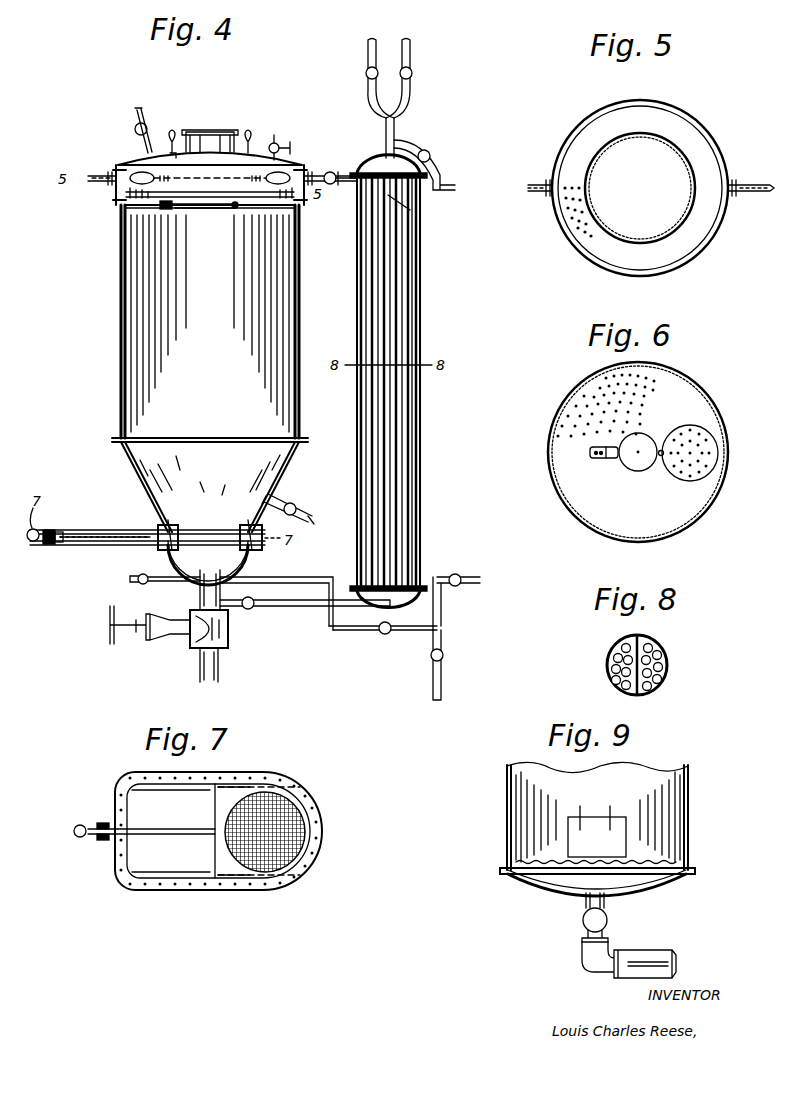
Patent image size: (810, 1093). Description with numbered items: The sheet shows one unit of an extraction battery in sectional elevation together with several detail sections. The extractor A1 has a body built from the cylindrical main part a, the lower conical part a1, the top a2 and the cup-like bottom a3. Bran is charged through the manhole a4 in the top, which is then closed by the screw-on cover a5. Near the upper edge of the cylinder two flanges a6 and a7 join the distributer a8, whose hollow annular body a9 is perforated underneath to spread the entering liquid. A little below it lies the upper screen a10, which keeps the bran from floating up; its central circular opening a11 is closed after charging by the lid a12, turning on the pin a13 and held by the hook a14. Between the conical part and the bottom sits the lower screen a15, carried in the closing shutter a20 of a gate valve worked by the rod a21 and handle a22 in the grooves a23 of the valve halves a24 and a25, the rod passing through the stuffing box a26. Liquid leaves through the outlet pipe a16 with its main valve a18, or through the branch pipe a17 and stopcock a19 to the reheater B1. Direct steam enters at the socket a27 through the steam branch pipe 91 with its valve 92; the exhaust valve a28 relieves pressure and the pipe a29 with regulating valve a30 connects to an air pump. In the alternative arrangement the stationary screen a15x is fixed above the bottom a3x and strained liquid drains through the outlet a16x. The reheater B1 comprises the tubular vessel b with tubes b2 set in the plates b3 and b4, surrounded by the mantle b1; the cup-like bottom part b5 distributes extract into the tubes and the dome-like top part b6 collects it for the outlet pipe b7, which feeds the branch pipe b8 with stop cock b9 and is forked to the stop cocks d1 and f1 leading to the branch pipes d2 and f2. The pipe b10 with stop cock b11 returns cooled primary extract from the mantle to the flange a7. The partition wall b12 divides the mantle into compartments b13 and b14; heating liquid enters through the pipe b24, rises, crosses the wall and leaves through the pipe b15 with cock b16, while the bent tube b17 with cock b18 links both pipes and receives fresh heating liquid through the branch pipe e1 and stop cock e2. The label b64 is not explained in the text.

In FIG. 4, the cylindrical main part a is at (120, 278).
In FIG. 5, the cylindrical main part a is at (722, 240).
In FIG. 6, the cylindrical main part a is at (727, 478).
In FIG. 9, the cylindrical main part a is at (690, 814).
In FIG. 4, the extractor A1 is at (204, 333).
In FIG. 4, the lower conical part a1 is at (126, 456).
In FIG. 4, the top a2 is at (256, 160).
In FIG. 4, the cup-like bottom a3 is at (172, 553).
In FIG. 4, the manhole a4 is at (170, 150).
In FIG. 4, the screw-on cover a5 is at (216, 130).
In FIG. 4, the flange a6 is at (116, 172).
In FIG. 5, the flange a6 is at (548, 180).
In FIG. 4, the flange a7 is at (322, 174).
In FIG. 5, the flange a7 is at (736, 180).
In FIG. 4, the distributer a8 is at (258, 190).
In FIG. 5, the distributer a8 is at (692, 134).
In FIG. 4, the hollow annular body a9 is at (125, 205).
In FIG. 5, the hollow annular body a9 is at (596, 228).
In FIG. 4, the upper screen a10 is at (138, 215).
In FIG. 6, the upper screen a10 is at (670, 384).
In FIG. 4, the circular opening a11 is at (192, 210).
In FIG. 6, the circular opening a11 is at (636, 460).
In FIG. 4, the lid a12 is at (206, 212).
In FIG. 6, the lid a12 is at (720, 446).
In FIG. 4, the pin a13 is at (235, 210).
In FIG. 6, the pin a13 is at (661, 460).
In FIG. 4, the hook a14 is at (166, 210).
In FIG. 6, the hook a14 is at (608, 460).
In FIG. 4, the lower screen a15 is at (204, 530).
In FIG. 7, the lower screen a15 is at (300, 830).
In FIG. 4, the outlet pipe a16 is at (200, 592).
In FIG. 4, the branch pipe a17 is at (280, 607).
In FIG. 4, the main valve a18 is at (186, 646).
In FIG. 4, the stopcock a19 is at (248, 609).
In FIG. 4, the closing shutter a20 is at (160, 528).
In FIG. 7, the closing shutter a20 is at (228, 866).
In FIG. 4, the rod a21 is at (46, 546).
In FIG. 7, the rod a21 is at (92, 838).
In FIG. 4, the handle a22 is at (38, 528).
In FIG. 7, the handle a22 is at (76, 824).
In FIG. 7, the grooves a23 is at (168, 878).
In FIG. 4, the upper valve half a24 is at (128, 530).
In FIG. 4, the lower valve half a25 is at (96, 546).
In FIG. 7, the lower valve half a25 is at (260, 776).
In FIG. 4, the stuffing box a26 is at (58, 546).
In FIG. 7, the stuffing box a26 is at (100, 822).
In FIG. 4, the socket a27 is at (276, 494).
In FIG. 4, the exhaust valve a28 is at (276, 143).
In FIG. 4, the pipe a29 is at (136, 116).
In FIG. 4, the regulating valve a30 is at (134, 125).
In FIG. 4, the tubular vessel b is at (410, 258).
In FIG. 4, the reheater B1 is at (395, 382).
In FIG. 8, the reheater B1 is at (668, 674).
In FIG. 4, the mantle b1 is at (421, 406).
In FIG. 8, the mantle b1 is at (607, 664).
In FIG. 4, the tubes b2 is at (387, 294).
In FIG. 8, the tubes b2 is at (612, 678).
In FIG. 4, the bottom plate b3 is at (405, 588).
In FIG. 4, the top plate b4 is at (398, 198).
In FIG. 4, the cup-like bottom part b5 is at (405, 600).
In FIG. 4, the dome-like top part b6 is at (376, 160).
In FIG. 4, the outlet pipe b7 is at (394, 128).
In FIG. 4, the branch pipe b8 is at (440, 170).
In FIG. 4, the stop cock b9 is at (430, 152).
In FIG. 4, the pipe b10 is at (340, 184).
In FIG. 5, the pipe b10 is at (750, 194).
In FIG. 4, the stop cock b11 is at (334, 186).
In FIG. 4, the partition wall b12 is at (392, 456).
In FIG. 8, the partition wall b12 is at (646, 644).
In FIG. 4, the compartment b13 is at (419, 310).
In FIG. 8, the compartment b13 is at (658, 652).
In FIG. 4, the compartment b14 is at (360, 300).
In FIG. 8, the compartment b14 is at (614, 652).
In FIG. 4, the pipe b15 is at (310, 578).
In FIG. 4, the cock b16 is at (138, 584).
In FIG. 4, the bent tube b17 is at (350, 632).
In FIG. 4, the cock b18 is at (388, 634).
In FIG. 4, the pipe b24 is at (462, 574).
In FIG. 4, the pipe b64 is at (108, 183).
In FIG. 5, the pipe b64 is at (532, 194).
In FIG. 4, the stop cock d1 is at (366, 70).
In FIG. 4, the branch pipe d2 is at (370, 36).
In FIG. 4, the stop cock f1 is at (412, 70).
In FIG. 4, the branch pipe f2 is at (410, 38).
In FIG. 4, the branch pipe e1 is at (441, 696).
In FIG. 4, the stop cock e2 is at (443, 658).
In FIG. 4, the steam branch pipe 91 is at (312, 520).
In FIG. 4, the valve 92 is at (296, 506).
In FIG. 9, the bottom of the extractor a3x is at (520, 880).
In FIG. 9, the stationary screen a15x is at (560, 866).
In FIG. 9, the outlet a16x is at (606, 902).